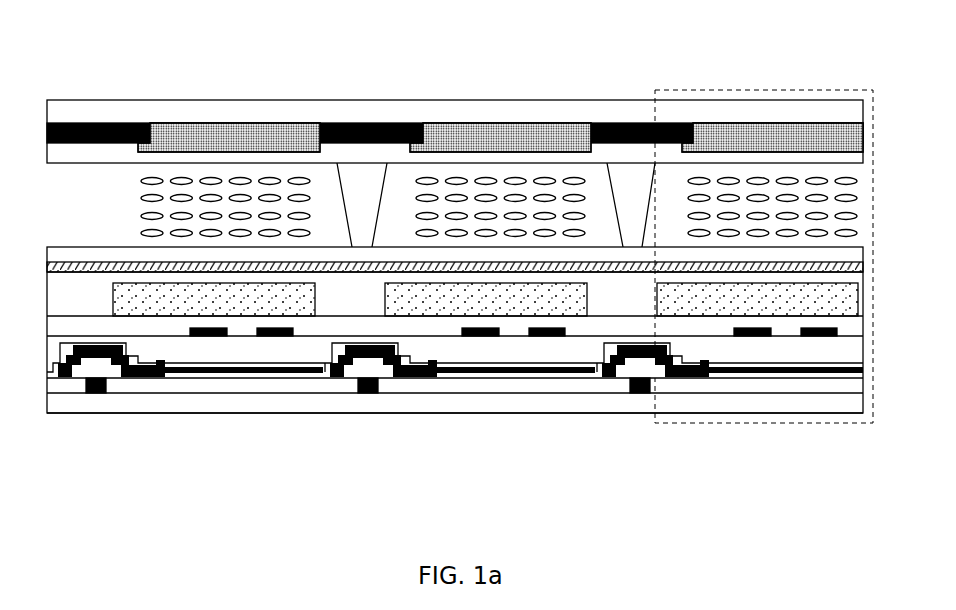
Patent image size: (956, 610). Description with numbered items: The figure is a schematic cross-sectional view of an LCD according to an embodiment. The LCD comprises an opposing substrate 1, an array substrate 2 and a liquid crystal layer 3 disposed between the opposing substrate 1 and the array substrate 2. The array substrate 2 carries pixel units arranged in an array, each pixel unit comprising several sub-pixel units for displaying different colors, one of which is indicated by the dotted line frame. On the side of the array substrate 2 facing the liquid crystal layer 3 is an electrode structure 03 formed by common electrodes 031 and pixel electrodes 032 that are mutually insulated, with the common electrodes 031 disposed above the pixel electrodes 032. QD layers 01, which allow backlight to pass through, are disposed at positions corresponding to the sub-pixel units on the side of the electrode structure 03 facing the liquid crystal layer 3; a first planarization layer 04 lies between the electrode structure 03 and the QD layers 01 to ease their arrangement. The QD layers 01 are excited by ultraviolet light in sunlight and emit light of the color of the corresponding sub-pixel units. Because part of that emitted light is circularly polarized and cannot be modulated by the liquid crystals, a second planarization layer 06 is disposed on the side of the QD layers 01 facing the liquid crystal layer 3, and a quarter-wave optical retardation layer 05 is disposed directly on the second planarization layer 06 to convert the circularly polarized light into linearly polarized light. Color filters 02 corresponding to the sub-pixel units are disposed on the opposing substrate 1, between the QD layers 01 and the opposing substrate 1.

The opposing substrate 1 is at (356, 120).
The color filters 02 is at (222, 135).
The liquid crystal layer 3 is at (456, 181).
The quarter-wave optical retardation layer 05 is at (575, 263).
The second planarization layer 06 is at (63, 293).
The QD layers 01 is at (192, 303).
The first planarization layer 04 is at (410, 327).
The array substrate 2 is at (340, 398).
The common electrodes 031 is at (543, 337).
The pixel electrodes 032 is at (533, 370).
The electrode structure 03 is at (460, 424).